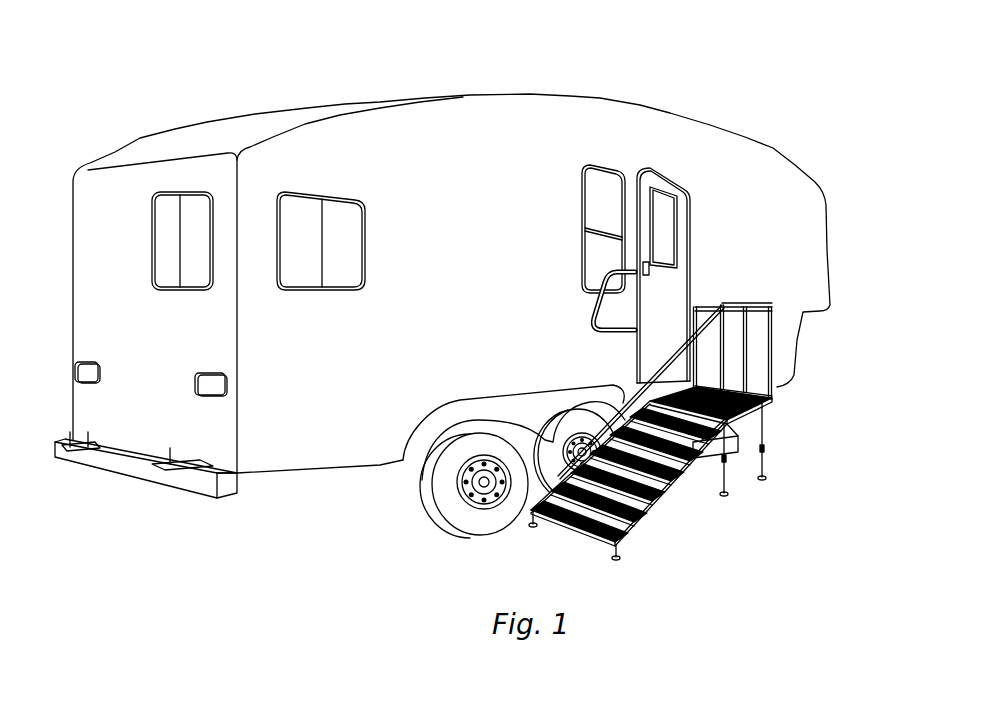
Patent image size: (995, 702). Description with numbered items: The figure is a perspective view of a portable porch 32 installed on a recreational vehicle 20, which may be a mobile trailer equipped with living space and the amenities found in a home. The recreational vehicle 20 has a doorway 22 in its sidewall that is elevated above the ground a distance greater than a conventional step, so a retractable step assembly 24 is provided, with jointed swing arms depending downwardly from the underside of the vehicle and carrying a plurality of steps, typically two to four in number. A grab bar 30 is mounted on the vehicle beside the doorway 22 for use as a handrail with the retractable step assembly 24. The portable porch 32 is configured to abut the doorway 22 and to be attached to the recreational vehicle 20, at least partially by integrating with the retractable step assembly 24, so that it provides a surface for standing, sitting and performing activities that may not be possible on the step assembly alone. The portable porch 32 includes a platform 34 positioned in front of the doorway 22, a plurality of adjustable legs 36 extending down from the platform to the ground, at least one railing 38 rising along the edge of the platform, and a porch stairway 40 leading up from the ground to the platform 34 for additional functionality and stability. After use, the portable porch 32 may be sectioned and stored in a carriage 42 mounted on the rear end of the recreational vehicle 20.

The recreational vehicle 20 is at (573, 98).
The doorway 22 is at (673, 283).
The retractable step assembly 24 is at (710, 465).
The grab bar 30 is at (594, 310).
The portable porch 32 is at (778, 350).
The platform 34 is at (748, 415).
The adjustable legs 36 is at (767, 437).
The railing 38 is at (742, 296).
The porch stairway 40 is at (638, 518).
The carriage 42 is at (143, 473).